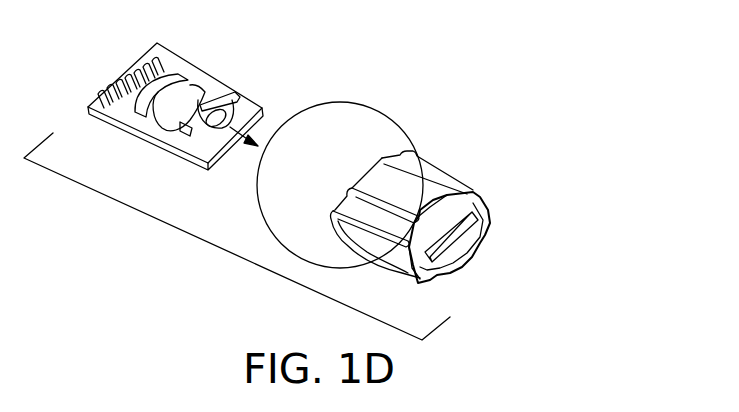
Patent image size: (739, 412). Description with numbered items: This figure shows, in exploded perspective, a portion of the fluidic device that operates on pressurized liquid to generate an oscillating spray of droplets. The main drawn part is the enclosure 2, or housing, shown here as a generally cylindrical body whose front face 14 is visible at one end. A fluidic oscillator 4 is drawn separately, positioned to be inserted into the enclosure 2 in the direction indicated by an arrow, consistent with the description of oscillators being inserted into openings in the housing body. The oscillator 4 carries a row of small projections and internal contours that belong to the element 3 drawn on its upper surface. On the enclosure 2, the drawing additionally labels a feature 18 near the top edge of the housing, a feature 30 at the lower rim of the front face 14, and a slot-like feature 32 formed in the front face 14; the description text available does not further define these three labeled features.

The enclosure 2 is at (378, 125).
The cutter blade 3 is at (207, 87).
The fluidic oscillator 4 is at (152, 140).
The front face 14 is at (477, 200).
The top edge 18 is at (413, 145).
The front rim 30 is at (417, 278).
The slot 32 is at (487, 237).